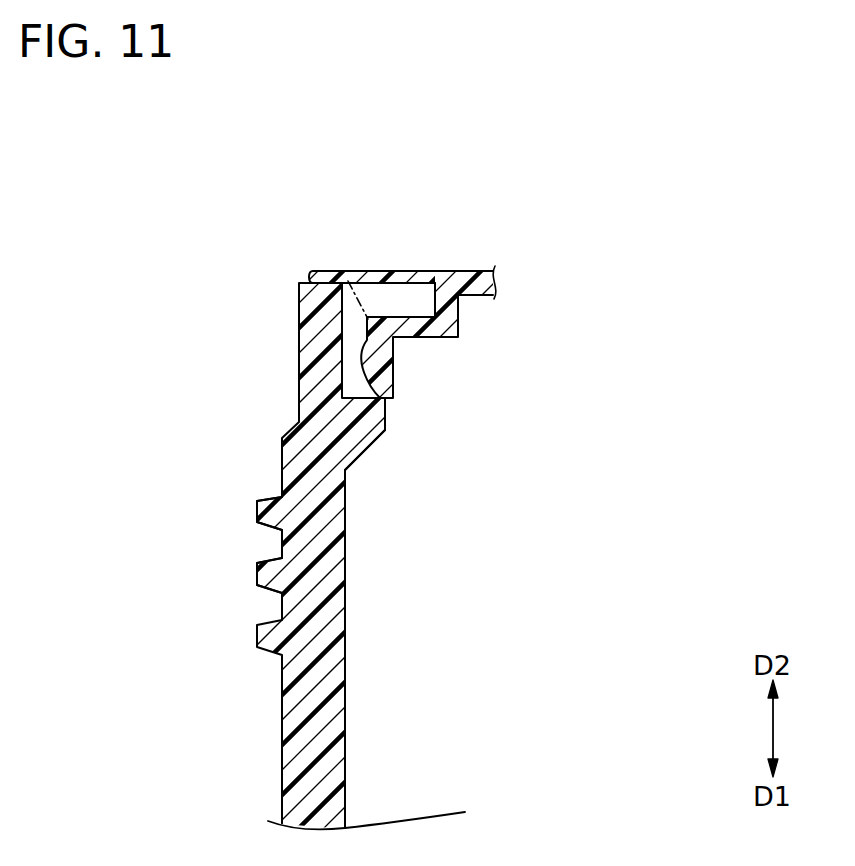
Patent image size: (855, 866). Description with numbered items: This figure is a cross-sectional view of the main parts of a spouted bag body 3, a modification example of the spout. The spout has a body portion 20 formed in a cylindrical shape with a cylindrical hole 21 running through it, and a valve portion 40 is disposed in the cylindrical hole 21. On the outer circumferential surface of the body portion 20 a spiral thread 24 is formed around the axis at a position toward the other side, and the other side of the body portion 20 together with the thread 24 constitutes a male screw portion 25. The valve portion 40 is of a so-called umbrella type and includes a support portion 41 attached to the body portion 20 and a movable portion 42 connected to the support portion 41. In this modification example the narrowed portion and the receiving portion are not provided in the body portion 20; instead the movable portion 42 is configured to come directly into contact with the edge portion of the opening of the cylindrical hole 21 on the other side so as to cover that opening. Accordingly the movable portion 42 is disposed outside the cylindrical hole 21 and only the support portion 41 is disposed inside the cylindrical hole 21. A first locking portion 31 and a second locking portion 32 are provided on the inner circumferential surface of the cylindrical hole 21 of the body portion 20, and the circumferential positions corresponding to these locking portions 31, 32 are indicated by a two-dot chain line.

The spouted bag body 3 is at (204, 227).
The body portion 20 is at (284, 323).
The cylindrical hole 21 is at (341, 758).
The thread 24 is at (257, 573).
The male screw portion 25 is at (245, 481).
The first locking portion 31 is at (353, 320).
The second locking portion 32 is at (362, 427).
The valve portion 40 is at (347, 193).
The support portion 41 is at (445, 296).
The movable portion 42 is at (390, 276).